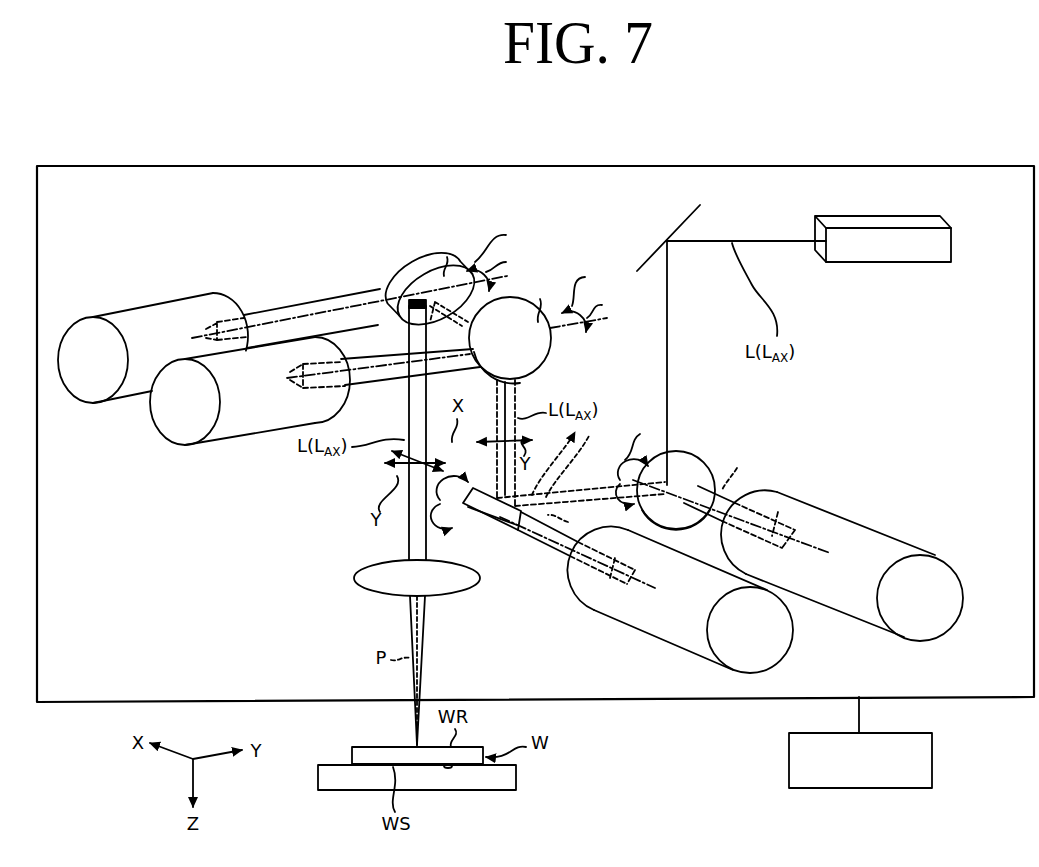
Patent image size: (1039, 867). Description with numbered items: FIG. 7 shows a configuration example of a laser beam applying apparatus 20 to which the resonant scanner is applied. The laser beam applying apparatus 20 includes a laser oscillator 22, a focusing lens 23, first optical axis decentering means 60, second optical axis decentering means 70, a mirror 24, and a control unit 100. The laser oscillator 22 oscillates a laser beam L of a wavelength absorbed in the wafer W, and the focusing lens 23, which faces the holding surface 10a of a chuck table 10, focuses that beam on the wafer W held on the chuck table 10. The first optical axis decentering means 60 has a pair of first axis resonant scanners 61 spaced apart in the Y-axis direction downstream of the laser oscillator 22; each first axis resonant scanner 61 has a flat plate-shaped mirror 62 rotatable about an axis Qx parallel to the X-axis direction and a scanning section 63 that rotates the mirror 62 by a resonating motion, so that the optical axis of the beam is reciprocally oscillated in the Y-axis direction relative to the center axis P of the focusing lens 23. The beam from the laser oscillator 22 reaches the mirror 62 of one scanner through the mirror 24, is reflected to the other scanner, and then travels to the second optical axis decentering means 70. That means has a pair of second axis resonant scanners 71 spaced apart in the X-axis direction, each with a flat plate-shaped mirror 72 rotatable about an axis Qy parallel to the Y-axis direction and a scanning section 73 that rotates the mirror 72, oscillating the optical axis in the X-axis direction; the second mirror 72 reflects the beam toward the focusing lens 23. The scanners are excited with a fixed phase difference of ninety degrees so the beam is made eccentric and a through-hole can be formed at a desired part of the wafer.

The chuck table 10 is at (517, 778).
The holding surface 10a is at (448, 770).
The laser beam applying apparatus 20 is at (569, 163).
The laser oscillator 22 is at (881, 216).
The focusing lens 23 is at (355, 579).
The mirror 24 is at (664, 238).
The first optical axis decentering means 60 is at (833, 483).
The first axis resonant scanner 61 is at (672, 650).
The mirror 62 is at (500, 540).
The scanning section 63 is at (885, 545).
The second optical axis decentering means 70 is at (332, 280).
The second axis resonant scanner 71 is at (114, 405).
The mirror 72 is at (416, 276).
The scanning section 73 is at (155, 318).
The control unit 100 is at (886, 733).